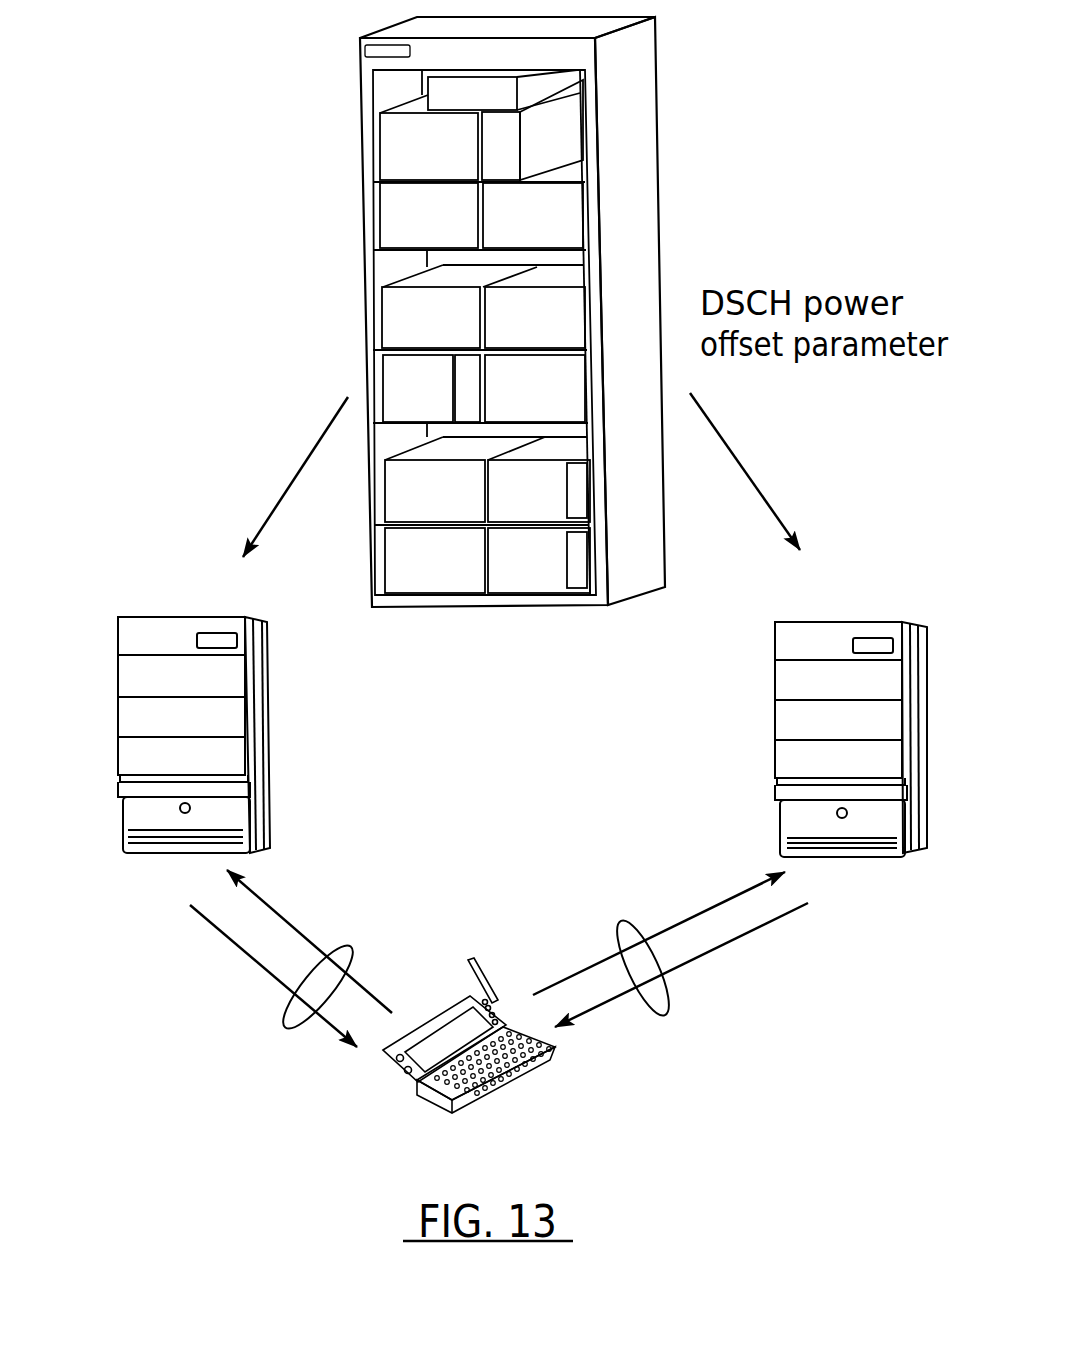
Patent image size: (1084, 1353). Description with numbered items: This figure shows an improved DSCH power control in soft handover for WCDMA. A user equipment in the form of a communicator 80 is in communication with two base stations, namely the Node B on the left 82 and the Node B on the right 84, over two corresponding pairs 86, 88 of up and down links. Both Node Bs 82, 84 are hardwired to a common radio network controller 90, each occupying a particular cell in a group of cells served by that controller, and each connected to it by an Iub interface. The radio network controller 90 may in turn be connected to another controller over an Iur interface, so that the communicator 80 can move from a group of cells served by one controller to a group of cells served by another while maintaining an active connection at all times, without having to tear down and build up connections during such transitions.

The communicator 80 is at (523, 1072).
The Node B on the left 82 is at (270, 665).
The Node B on the right 84 is at (775, 667).
The pair of up and down links 86 is at (287, 1007).
The pair of up and down links 88 is at (670, 987).
The radio network controller 90 is at (660, 160).